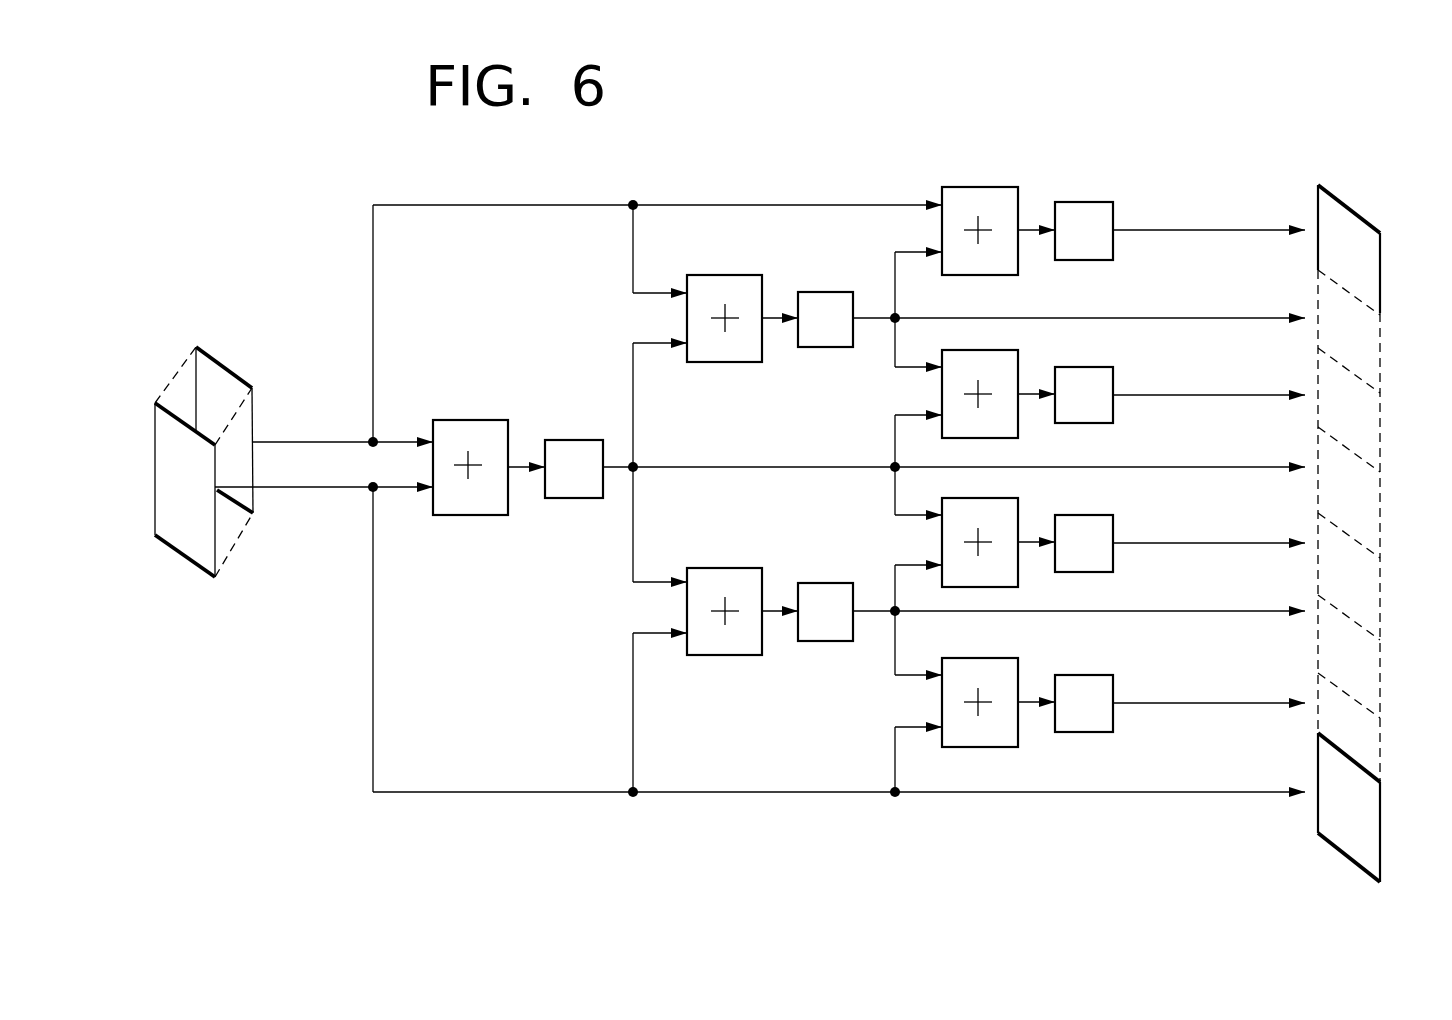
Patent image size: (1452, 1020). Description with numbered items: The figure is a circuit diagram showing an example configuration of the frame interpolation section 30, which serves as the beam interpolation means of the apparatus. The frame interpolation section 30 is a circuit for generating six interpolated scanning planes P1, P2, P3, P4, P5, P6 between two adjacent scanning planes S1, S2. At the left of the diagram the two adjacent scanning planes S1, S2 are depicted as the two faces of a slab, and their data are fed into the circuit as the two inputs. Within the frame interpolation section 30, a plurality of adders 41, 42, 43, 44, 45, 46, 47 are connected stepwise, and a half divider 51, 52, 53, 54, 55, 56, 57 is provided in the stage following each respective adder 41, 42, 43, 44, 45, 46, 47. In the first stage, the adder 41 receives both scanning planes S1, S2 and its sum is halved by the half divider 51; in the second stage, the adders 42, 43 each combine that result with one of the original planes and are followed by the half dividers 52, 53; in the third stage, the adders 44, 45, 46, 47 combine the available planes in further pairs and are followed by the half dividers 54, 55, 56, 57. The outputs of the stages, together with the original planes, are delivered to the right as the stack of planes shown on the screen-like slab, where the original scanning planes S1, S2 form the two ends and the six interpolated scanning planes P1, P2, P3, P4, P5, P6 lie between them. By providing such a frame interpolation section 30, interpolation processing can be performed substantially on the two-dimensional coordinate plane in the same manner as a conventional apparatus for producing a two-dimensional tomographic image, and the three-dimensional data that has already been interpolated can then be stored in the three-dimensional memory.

The frame interpolation section 30 is at (897, 140).
The adder 41 is at (470, 420).
The adder 42 is at (727, 275).
The adder 43 is at (727, 568).
The adder 44 is at (980, 187).
The adder 45 is at (980, 350).
The adder 46 is at (980, 498).
The adder 47 is at (980, 658).
The half divider 51 is at (570, 440).
The half divider 52 is at (823, 292).
The half divider 53 is at (820, 583).
The half divider 54 is at (1080, 202).
The half divider 55 is at (1093, 367).
The half divider 56 is at (1093, 515).
The half divider 57 is at (1093, 675).
The scanning plane S1 is at (188, 538).
The scanning plane S2 is at (233, 370).
The interpolated scanning plane P1 is at (1368, 735).
The interpolated scanning plane P2 is at (1368, 660).
The interpolated scanning plane P3 is at (1368, 590).
The interpolated scanning plane P4 is at (1368, 505).
The interpolated scanning plane P5 is at (1368, 420).
The interpolated scanning plane P6 is at (1368, 340).